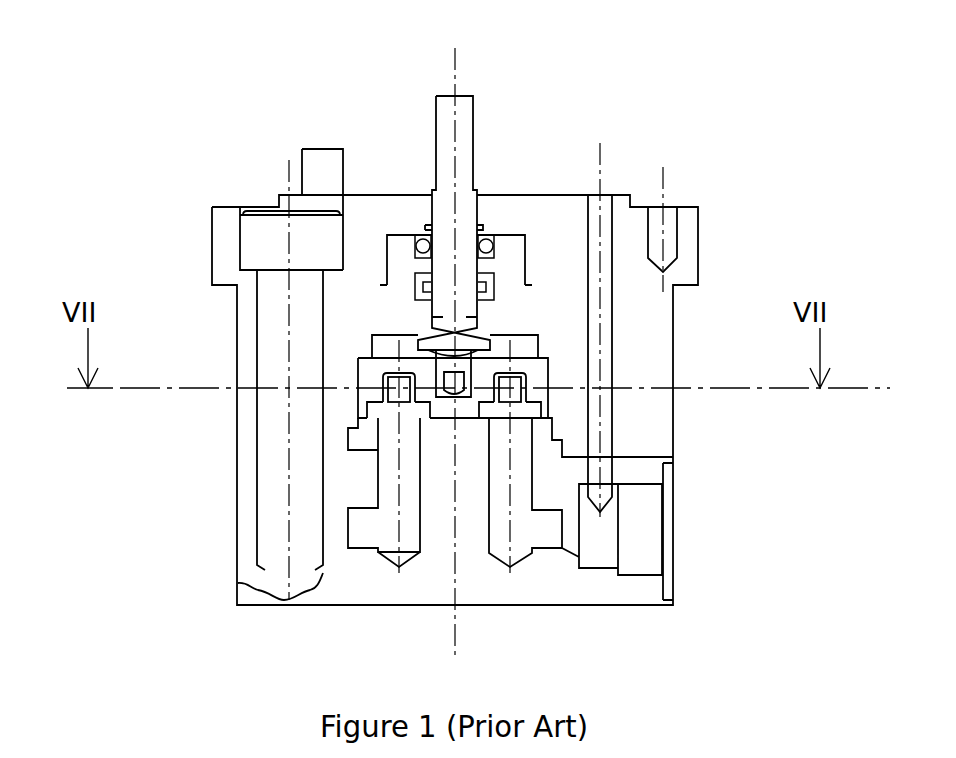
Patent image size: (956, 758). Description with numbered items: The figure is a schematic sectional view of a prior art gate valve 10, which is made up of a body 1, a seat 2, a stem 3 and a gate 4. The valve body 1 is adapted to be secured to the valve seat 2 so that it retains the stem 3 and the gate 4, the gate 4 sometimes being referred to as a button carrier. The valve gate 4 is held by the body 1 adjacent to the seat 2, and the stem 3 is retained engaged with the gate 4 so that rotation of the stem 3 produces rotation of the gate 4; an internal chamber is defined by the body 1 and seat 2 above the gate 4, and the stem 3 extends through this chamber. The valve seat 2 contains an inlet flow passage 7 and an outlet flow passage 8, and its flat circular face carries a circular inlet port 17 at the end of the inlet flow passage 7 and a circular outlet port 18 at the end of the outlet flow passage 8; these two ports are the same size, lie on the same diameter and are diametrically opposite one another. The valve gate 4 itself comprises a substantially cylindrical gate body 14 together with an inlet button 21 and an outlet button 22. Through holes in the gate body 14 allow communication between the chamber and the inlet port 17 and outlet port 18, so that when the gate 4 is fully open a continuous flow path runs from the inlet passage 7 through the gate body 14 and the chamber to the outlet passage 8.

The body 1 is at (633, 317).
The seat 2 is at (527, 582).
The stem 3 is at (440, 215).
The gate 4 is at (388, 357).
The inlet flow passage 7 is at (420, 507).
The outlet flow passage 8 is at (537, 476).
The gate valve 10 is at (702, 152).
The gate body 14 is at (533, 373).
The inlet port 17 is at (412, 420).
The outlet port 18 is at (553, 448).
The inlet button 21 is at (392, 418).
The outlet button 22 is at (535, 413).